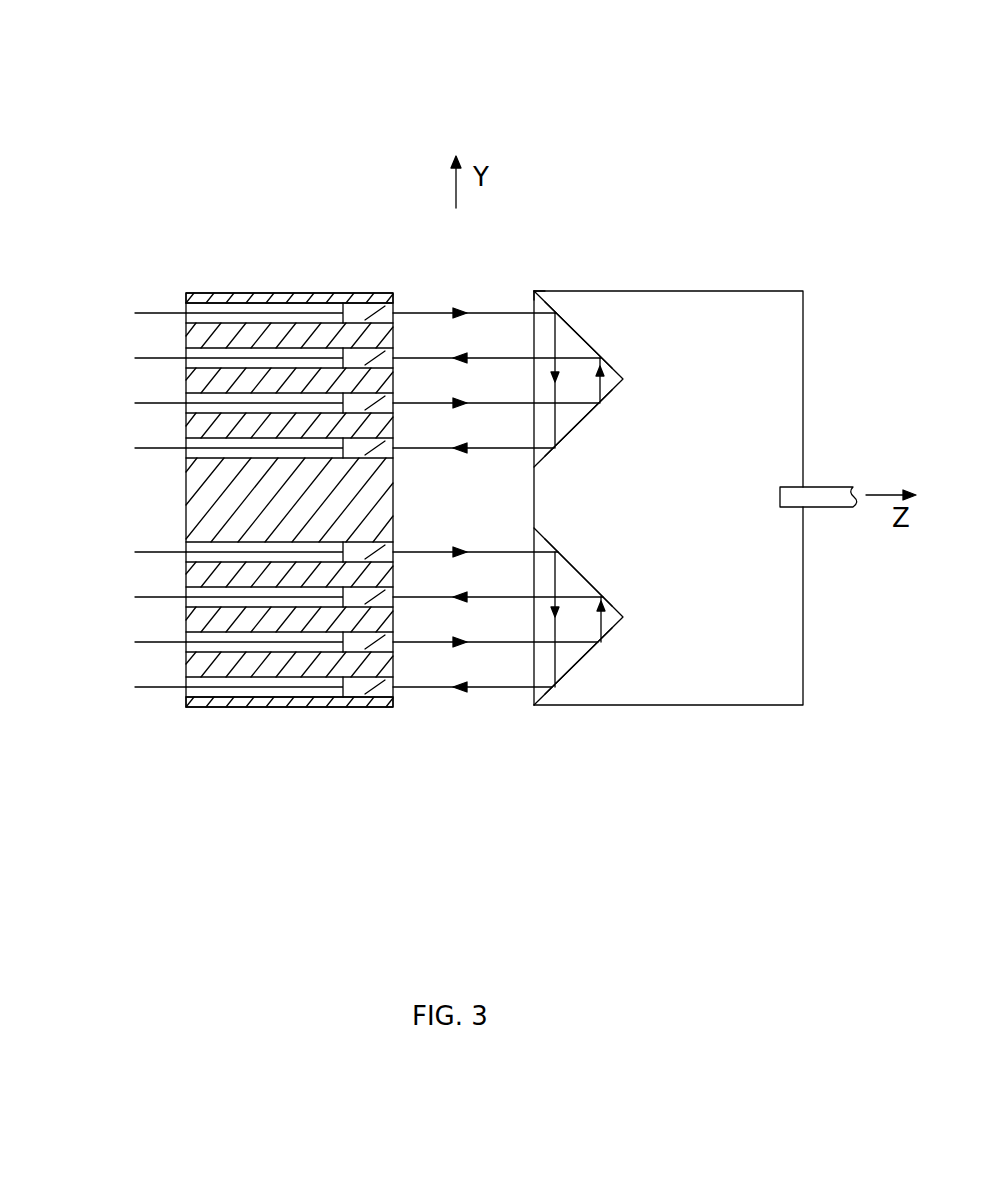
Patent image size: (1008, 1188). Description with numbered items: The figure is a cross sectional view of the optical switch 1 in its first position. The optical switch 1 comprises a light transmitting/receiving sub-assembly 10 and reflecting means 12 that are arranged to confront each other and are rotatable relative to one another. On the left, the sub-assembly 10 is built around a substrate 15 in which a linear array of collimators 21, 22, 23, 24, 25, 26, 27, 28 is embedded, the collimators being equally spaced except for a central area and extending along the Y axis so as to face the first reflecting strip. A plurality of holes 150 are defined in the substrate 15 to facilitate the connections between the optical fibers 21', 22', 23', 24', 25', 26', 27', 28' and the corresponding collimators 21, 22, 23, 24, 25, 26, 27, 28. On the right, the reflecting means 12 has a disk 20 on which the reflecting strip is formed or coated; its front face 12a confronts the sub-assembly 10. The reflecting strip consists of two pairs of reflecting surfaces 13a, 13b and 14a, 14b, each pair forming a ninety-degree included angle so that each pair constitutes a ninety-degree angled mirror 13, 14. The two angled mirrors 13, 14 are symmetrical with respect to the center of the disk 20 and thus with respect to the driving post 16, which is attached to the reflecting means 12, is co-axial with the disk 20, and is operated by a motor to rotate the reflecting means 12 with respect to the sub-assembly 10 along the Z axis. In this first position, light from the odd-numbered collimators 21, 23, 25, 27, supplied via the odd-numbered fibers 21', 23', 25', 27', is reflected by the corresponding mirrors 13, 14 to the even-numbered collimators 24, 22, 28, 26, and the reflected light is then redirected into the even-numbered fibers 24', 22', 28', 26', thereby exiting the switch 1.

The optical switch 1 is at (388, 42).
The light transmitting/receiving sub-assembly 10 is at (188, 194).
The reflecting means 12 is at (604, 229).
The incident surface of optical element 12a is at (533, 293).
The 90-degree angled mirror 13 is at (562, 313).
The reflecting surface 13a is at (571, 332).
The reflecting surface 13b is at (565, 418).
The 90-degree angled mirror 14 is at (600, 636).
The reflecting surface 14a is at (570, 568).
The reflecting surface 14b is at (575, 662).
The substrate 15 is at (315, 300).
The holes 150 is at (240, 302).
The driving post 16 is at (822, 493).
The disk 20 is at (748, 325).
The collimator 21 is at (371, 300).
The collimator 22 is at (393, 345).
The collimator 23 is at (392, 390).
The collimator 24 is at (370, 435).
The collimator 25 is at (372, 539).
The collimator 26 is at (394, 584).
The collimator 27 is at (392, 629).
The collimator 28 is at (369, 674).
The optical fiber 21' is at (129, 295).
The optical fiber 22' is at (129, 340).
The optical fiber 23' is at (129, 385).
The optical fiber 24' is at (129, 430).
The optical fiber 25' is at (126, 534).
The optical fiber 26' is at (126, 579).
The optical fiber 27' is at (126, 624).
The optical fiber 28' is at (126, 669).